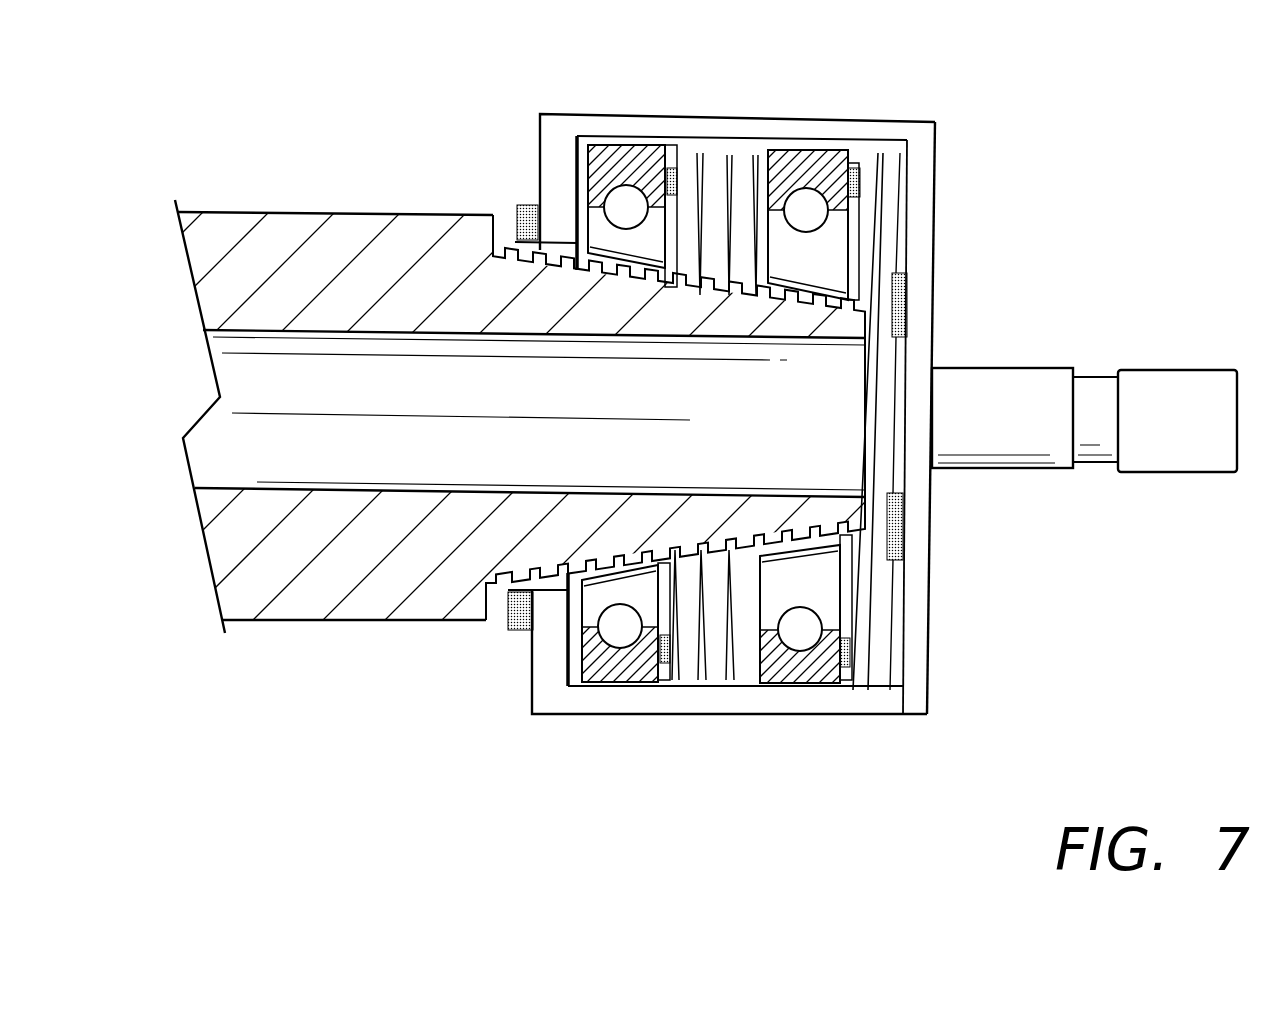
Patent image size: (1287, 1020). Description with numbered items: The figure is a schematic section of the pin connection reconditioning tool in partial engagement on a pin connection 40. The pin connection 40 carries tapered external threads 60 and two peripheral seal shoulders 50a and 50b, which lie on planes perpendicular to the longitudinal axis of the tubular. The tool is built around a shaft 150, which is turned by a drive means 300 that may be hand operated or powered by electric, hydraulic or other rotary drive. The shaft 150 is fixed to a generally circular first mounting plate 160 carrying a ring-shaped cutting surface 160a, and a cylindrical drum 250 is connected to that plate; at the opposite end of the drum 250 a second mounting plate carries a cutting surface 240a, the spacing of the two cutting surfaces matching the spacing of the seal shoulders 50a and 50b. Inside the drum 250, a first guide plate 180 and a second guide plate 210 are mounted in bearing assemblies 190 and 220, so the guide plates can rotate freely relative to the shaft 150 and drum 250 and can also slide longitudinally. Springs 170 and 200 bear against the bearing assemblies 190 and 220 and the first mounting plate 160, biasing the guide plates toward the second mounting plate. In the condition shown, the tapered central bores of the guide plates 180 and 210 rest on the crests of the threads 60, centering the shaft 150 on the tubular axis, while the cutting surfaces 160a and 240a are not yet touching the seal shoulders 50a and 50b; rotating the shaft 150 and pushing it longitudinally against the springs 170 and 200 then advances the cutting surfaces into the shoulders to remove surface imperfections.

The pin connection 40 is at (233, 218).
The threads 60 is at (698, 300).
The cylindrical drum 250 is at (738, 127).
The first mounting plate 160 is at (920, 663).
The bearing assembly 220 is at (616, 160).
The bearing assembly 190 is at (802, 667).
The second guide plate 210 is at (592, 607).
The spring 200 is at (697, 672).
The first guide plate 180 is at (773, 607).
The spring 170 is at (882, 170).
The seal shoulder 50a is at (865, 340).
The seal shoulder 50b is at (504, 220).
The cutting surface 160a is at (903, 533).
The cutting surface 240a is at (512, 630).
The shaft 150 is at (1030, 370).
The drive means 300 is at (1173, 468).